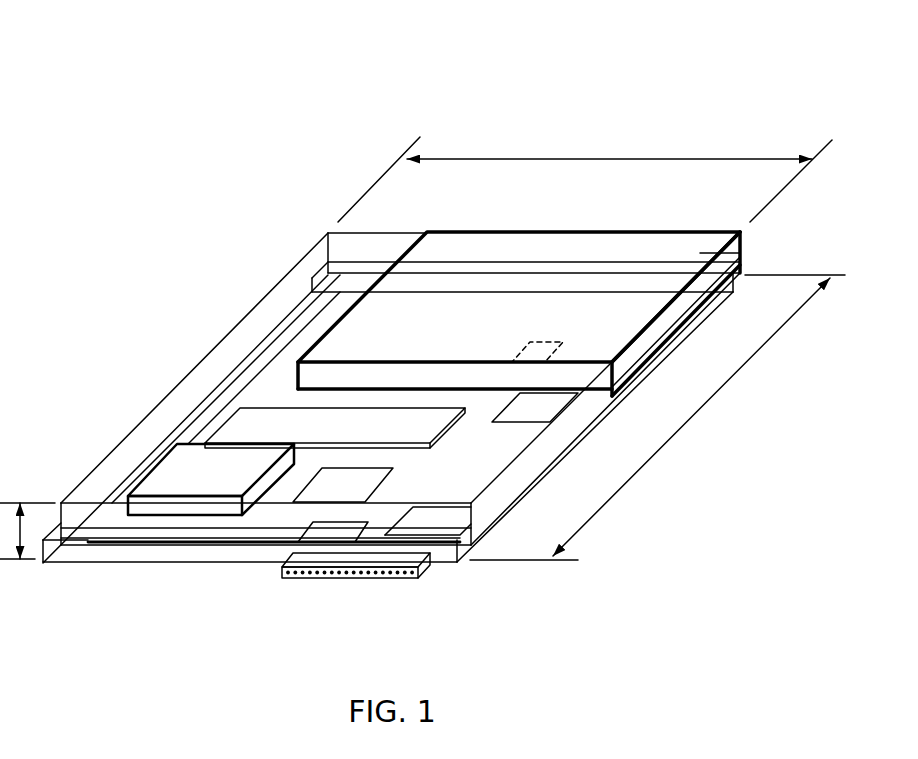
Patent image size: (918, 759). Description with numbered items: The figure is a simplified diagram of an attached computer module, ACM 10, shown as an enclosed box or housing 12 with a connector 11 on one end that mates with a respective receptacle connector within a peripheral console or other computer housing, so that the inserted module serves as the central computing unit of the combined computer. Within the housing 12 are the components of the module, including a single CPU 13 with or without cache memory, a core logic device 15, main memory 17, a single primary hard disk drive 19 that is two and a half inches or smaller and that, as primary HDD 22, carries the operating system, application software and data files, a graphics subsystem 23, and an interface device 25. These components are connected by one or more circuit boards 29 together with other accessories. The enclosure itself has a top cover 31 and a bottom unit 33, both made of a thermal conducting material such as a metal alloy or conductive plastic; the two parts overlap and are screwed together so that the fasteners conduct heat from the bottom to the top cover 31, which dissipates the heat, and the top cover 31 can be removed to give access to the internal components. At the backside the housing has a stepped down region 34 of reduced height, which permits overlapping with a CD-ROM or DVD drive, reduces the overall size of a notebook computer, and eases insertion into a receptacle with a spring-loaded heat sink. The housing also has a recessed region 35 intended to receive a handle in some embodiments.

The ACM 10 is at (700, 76).
The connector 11 is at (308, 575).
The housing 12 is at (716, 244).
The CPU 13 is at (172, 466).
The core logic device 15 is at (540, 412).
The main memory 17 is at (428, 427).
The primary hard disk drive 19 is at (618, 338).
The primary HDD 22 is at (457, 334).
The graphics subsystem 23 is at (483, 512).
The interface device 25 is at (298, 553).
The circuit boards 29 is at (345, 305).
The top cover 31 is at (292, 286).
The bottom unit 33 is at (487, 540).
The stepped down region 34 is at (125, 545).
The recessed region 35 is at (736, 277).